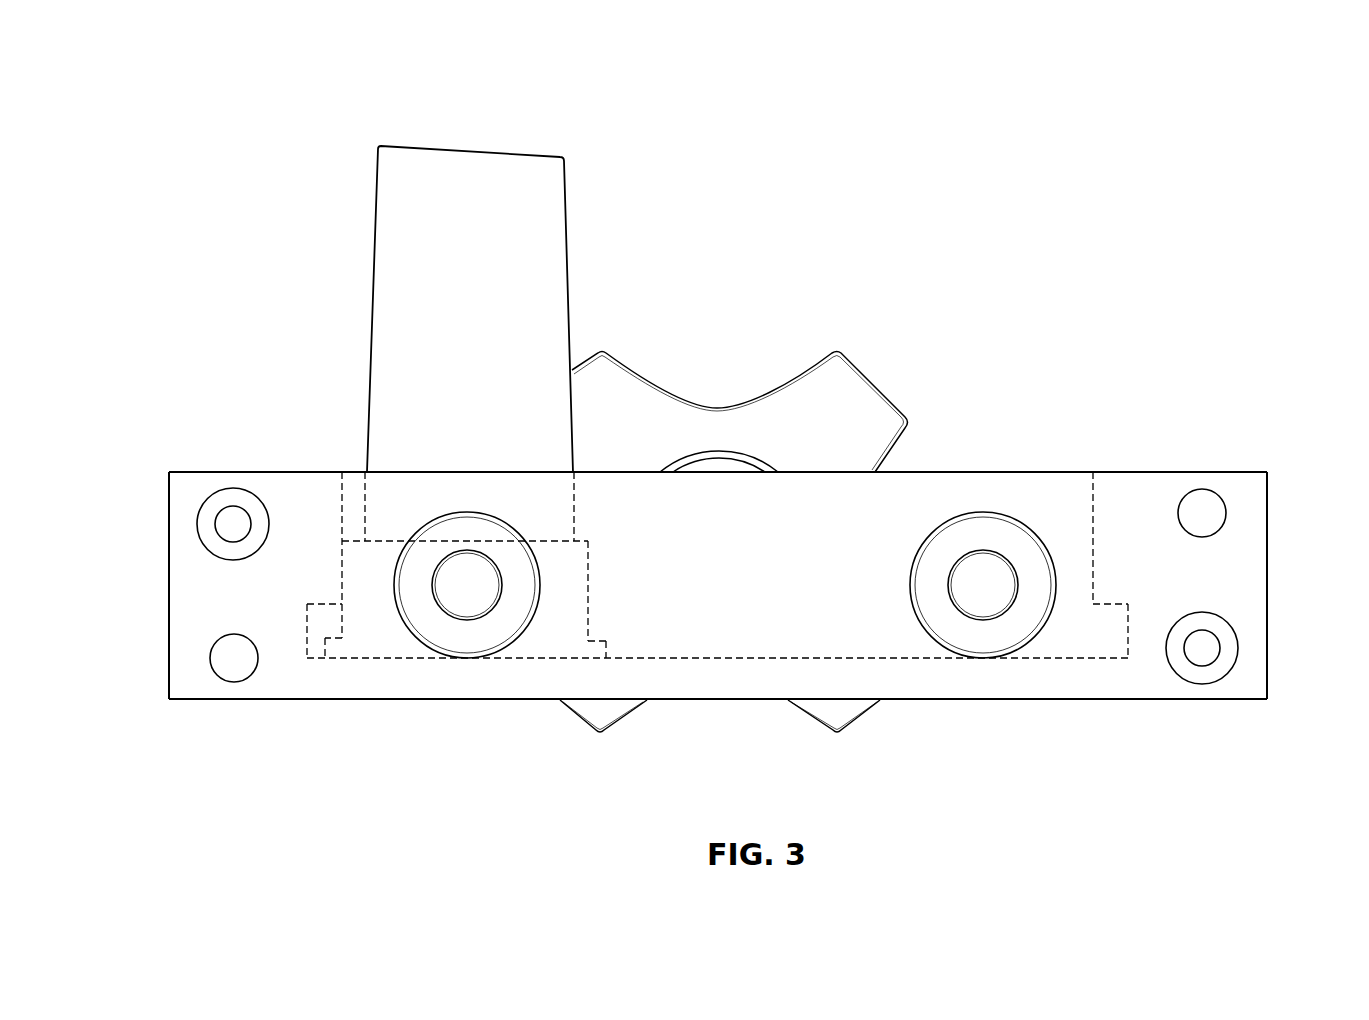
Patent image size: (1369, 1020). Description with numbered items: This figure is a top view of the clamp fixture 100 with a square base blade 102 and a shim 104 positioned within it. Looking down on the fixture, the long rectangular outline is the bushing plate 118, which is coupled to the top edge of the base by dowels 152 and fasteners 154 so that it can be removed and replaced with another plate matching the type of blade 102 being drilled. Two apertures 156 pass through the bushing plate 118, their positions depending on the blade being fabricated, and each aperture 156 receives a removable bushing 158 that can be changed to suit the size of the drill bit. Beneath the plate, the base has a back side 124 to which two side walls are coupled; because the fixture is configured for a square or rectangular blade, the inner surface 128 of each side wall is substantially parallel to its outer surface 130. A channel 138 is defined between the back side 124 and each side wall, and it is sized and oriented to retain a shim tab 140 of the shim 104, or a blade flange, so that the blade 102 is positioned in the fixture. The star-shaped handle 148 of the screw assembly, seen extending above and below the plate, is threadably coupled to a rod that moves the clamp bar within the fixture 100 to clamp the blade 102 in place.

The clamp fixture 100 is at (168, 122).
The square base blade 102 is at (423, 163).
The shim 104 is at (577, 597).
The bushing plate 118 is at (1237, 573).
The back side 124 is at (762, 687).
The inner surface 128 is at (343, 492).
The outer surface 130 is at (168, 587).
The channel 138 is at (318, 622).
The shim tab 140 is at (337, 650).
The handle 148 is at (635, 393).
The dowels 152 is at (233, 650).
The fasteners 154 is at (233, 523).
The apertures 156 is at (472, 570).
The bushing 158 is at (472, 637).